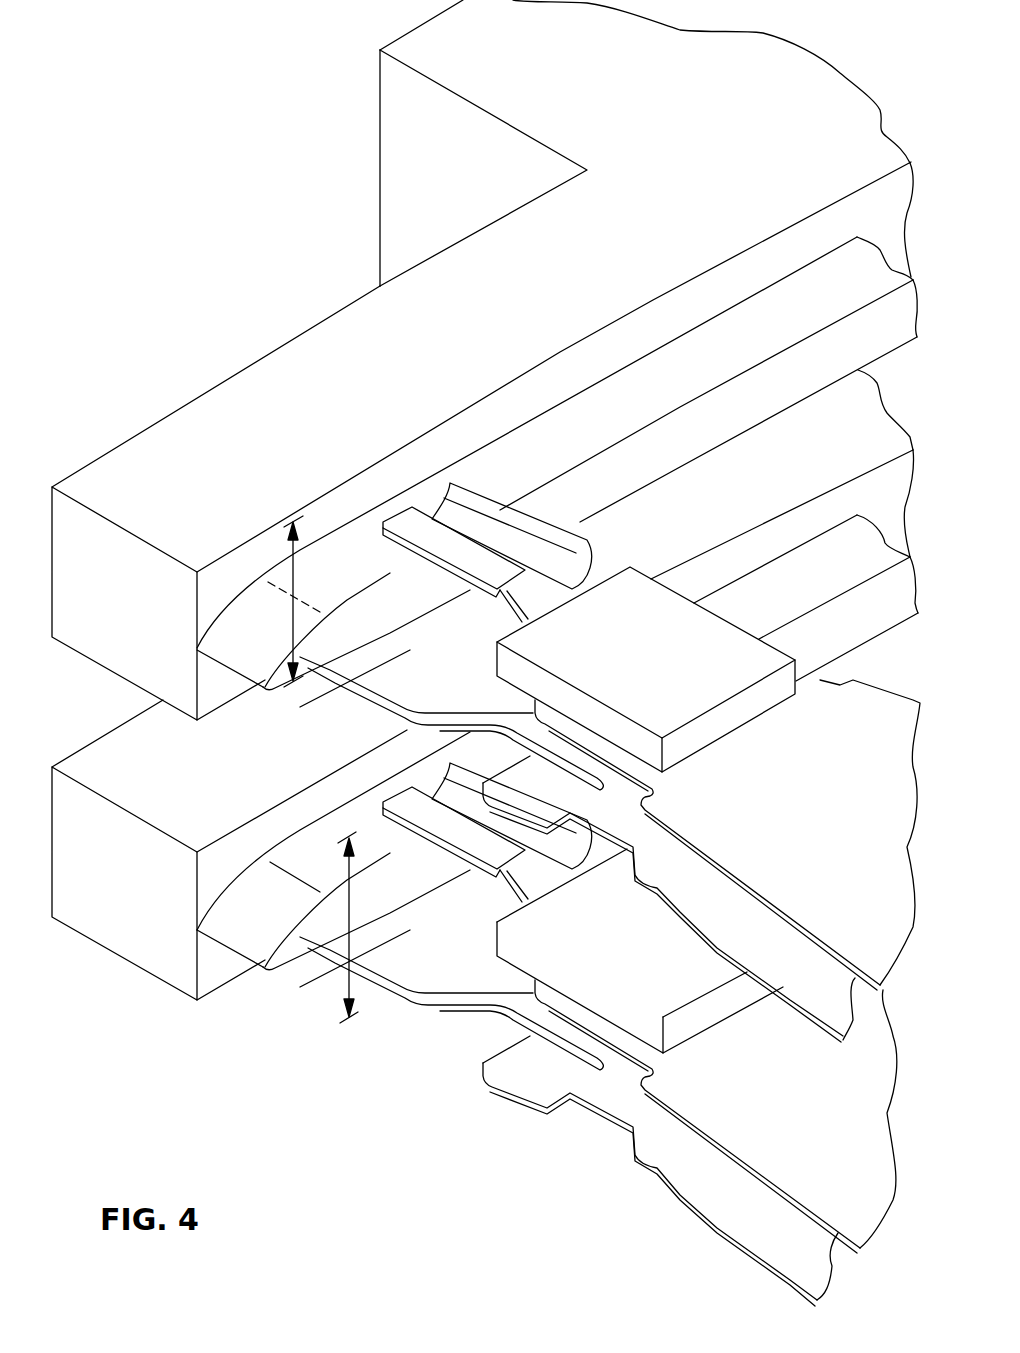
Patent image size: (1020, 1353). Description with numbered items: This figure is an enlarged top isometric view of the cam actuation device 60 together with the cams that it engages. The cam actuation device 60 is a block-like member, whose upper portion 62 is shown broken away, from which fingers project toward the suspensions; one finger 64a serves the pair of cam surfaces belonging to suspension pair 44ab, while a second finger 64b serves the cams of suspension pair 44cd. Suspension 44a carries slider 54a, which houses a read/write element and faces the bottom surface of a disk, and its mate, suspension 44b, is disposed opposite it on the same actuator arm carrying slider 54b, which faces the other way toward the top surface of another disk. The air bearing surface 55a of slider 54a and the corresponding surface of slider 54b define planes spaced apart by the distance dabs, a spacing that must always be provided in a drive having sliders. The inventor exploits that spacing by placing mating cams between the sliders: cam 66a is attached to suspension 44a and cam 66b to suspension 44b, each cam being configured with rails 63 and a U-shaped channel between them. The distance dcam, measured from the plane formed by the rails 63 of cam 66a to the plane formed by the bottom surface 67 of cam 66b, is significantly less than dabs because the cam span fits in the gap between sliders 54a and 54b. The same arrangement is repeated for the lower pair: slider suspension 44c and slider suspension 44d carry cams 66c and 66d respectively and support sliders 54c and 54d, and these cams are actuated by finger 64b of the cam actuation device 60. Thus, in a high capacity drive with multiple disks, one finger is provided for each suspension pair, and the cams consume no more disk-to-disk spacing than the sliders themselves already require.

The cam actuation device 60 is at (302, 302).
The ramp inclined surface 62 is at (418, 35).
The rails 63 is at (480, 480).
The finger 64a is at (216, 629).
The finger 64b is at (216, 916).
The cam 66a is at (586, 556).
The cam 66b is at (476, 695).
The cam 66c is at (527, 902).
The cam 66d is at (454, 965).
The bottom surface 67 is at (489, 597).
The ABS surface 55a is at (700, 600).
The slider 54a is at (561, 692).
The slider 54b is at (607, 878).
The slider 54c is at (561, 968).
The slider 54d is at (570, 1123).
The suspension 44a is at (849, 803).
The suspension 44b is at (745, 922).
The slider suspension 44c is at (841, 1125).
The slider suspension 44d is at (801, 1238).
The suspension pair 44ab is at (882, 674).
The suspension pair 44cd is at (712, 1245).
The distance d_abs dabs is at (345, 607).
The distance d_cam dcam is at (347, 981).